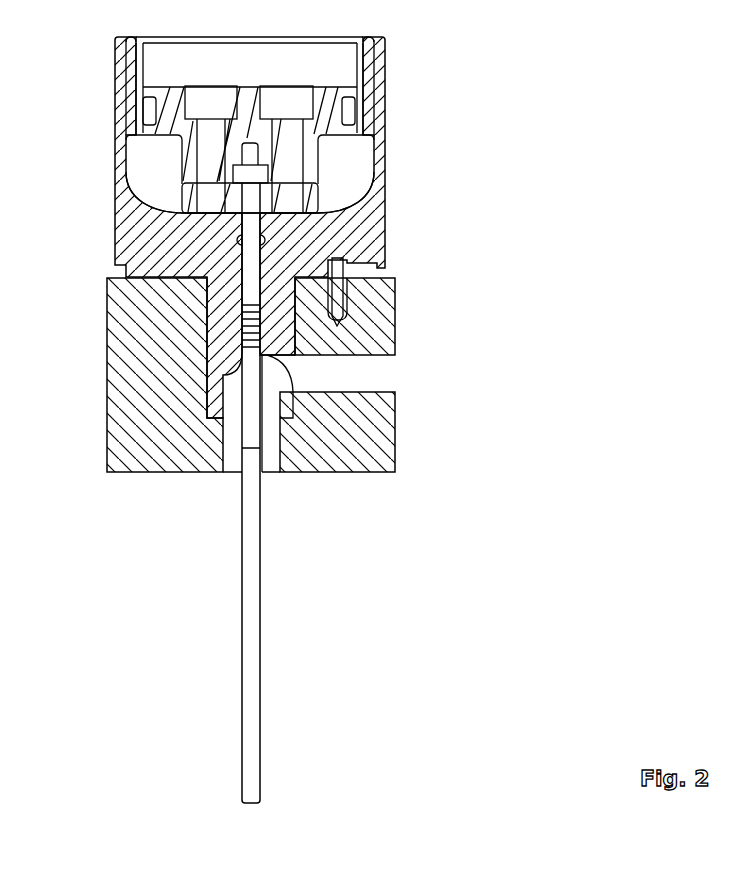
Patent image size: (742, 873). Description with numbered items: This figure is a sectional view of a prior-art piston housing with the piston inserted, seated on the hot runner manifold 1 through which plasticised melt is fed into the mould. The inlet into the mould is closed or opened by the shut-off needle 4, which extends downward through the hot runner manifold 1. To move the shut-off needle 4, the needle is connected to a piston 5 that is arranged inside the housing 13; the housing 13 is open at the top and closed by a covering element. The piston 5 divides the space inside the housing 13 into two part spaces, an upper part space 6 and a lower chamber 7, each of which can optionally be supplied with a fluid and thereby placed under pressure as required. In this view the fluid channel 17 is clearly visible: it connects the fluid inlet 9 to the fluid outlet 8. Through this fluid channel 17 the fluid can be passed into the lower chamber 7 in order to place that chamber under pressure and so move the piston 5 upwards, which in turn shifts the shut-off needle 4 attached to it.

The hot runner manifold 1 is at (382, 328).
The shut-off needle 4 is at (252, 598).
The piston 5 is at (152, 124).
The part space 6 is at (250, 88).
The lower chamber 7 is at (262, 186).
The fluid outlet 8 is at (365, 135).
The fluid inlet 9 is at (378, 37).
The housing 13 is at (375, 195).
The fluid channel 17 is at (368, 94).